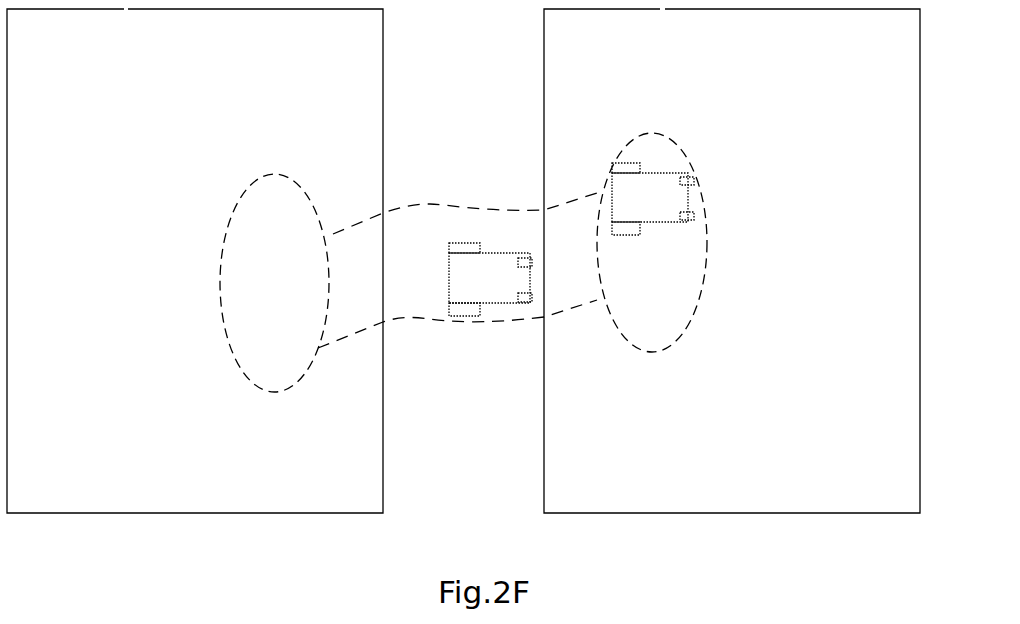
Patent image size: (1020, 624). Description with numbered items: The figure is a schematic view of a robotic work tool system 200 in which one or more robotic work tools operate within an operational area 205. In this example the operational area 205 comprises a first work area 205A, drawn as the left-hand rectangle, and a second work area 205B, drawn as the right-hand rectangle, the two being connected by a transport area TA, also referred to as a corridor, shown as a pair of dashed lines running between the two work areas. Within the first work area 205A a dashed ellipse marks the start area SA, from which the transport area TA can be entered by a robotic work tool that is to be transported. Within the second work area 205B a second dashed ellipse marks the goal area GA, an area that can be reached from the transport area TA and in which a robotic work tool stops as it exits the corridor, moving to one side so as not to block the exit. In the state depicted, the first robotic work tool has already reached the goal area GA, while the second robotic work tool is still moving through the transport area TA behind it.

The first work area 205A is at (195, 261).
The second work area 205B is at (732, 261).
The operational area 205 is at (142, 623).
The robotic work tool system 200 is at (774, 547).
The start area SA is at (274, 283).
The goal area GA is at (652, 242).
The transport area TA is at (457, 270).